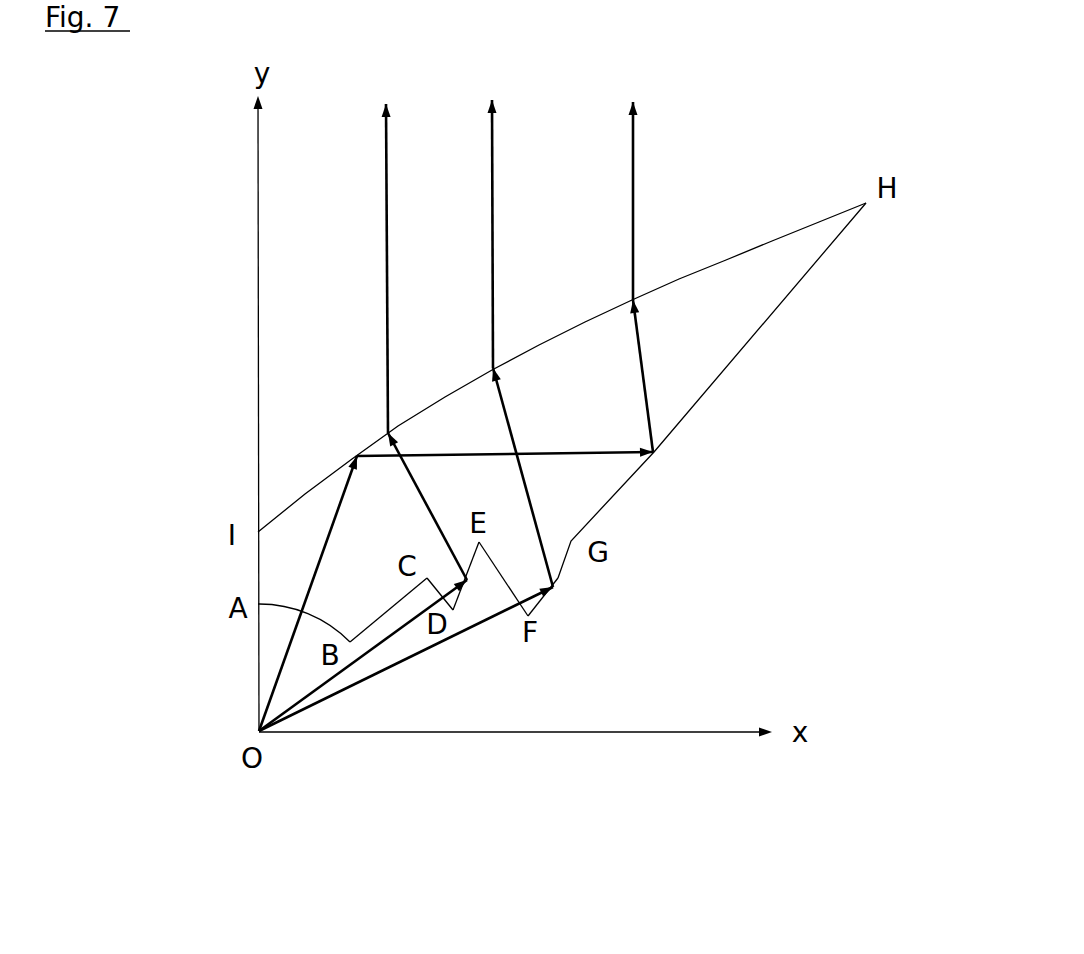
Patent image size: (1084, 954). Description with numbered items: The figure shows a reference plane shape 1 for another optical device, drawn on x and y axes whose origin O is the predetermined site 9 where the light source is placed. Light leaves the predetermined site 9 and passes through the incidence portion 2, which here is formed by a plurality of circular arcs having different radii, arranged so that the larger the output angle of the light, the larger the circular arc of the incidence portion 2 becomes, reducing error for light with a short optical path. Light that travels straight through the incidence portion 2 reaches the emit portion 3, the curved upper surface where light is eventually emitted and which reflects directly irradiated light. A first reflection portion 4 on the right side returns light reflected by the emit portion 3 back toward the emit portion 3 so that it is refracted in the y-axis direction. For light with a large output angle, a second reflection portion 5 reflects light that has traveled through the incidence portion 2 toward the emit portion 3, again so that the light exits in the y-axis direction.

The reference plane shape 1 is at (164, 145).
The incidence portion 2 is at (257, 640).
The emit portion 3 is at (547, 300).
The first reflection portion 4 is at (700, 400).
The second reflection portion 5 is at (432, 590).
The predetermined site 9 is at (257, 730).